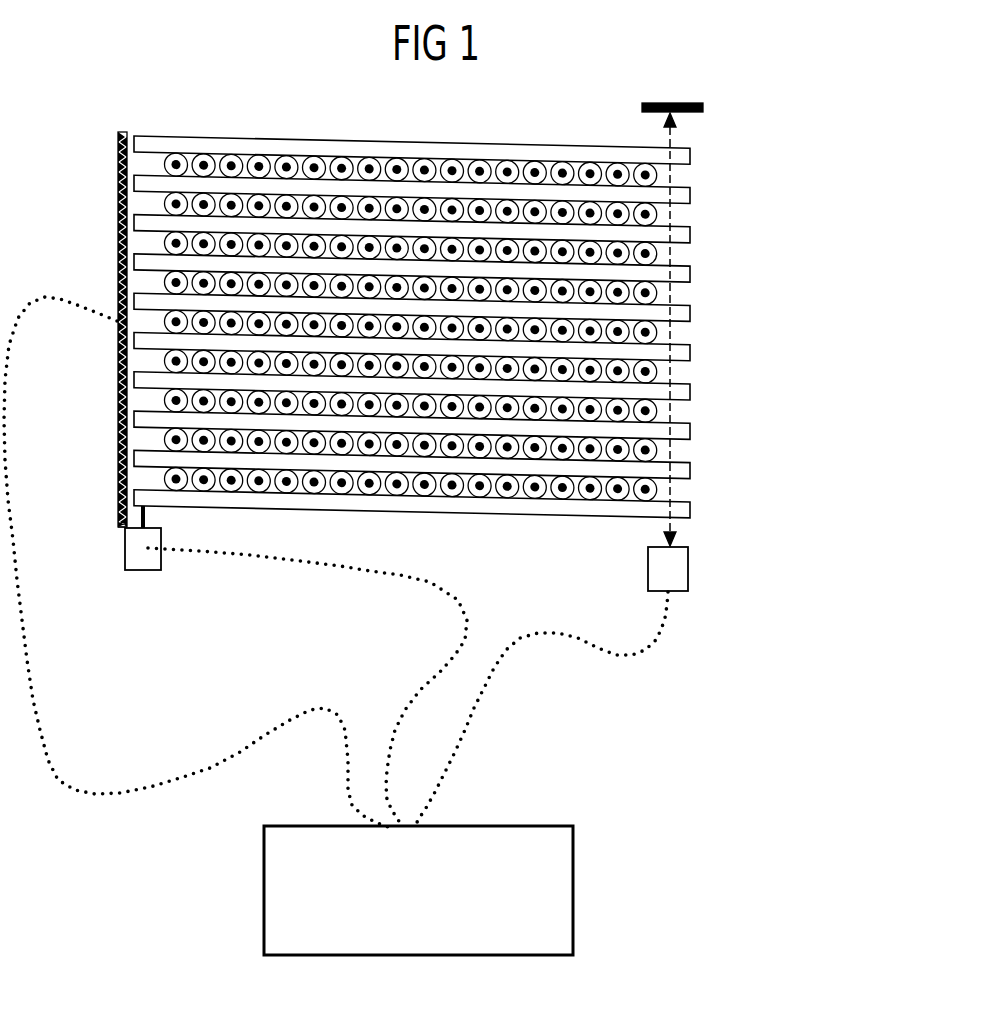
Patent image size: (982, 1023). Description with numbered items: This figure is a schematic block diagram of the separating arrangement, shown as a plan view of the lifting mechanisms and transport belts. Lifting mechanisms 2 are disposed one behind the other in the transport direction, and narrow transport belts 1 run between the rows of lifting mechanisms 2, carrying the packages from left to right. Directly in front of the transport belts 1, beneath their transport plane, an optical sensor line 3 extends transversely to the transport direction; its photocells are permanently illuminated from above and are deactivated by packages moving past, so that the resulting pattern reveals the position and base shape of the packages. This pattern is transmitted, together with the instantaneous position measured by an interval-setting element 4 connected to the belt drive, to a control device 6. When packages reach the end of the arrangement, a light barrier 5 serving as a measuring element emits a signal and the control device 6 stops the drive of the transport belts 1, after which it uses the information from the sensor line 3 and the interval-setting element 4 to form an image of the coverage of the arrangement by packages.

The transport belts 1 is at (334, 138).
The lifting mechanisms 2 is at (655, 172).
The optical sensor line 3 is at (122, 150).
The interval-setting element 4 is at (140, 556).
The light barrier 5 is at (670, 567).
The control device 6 is at (538, 890).